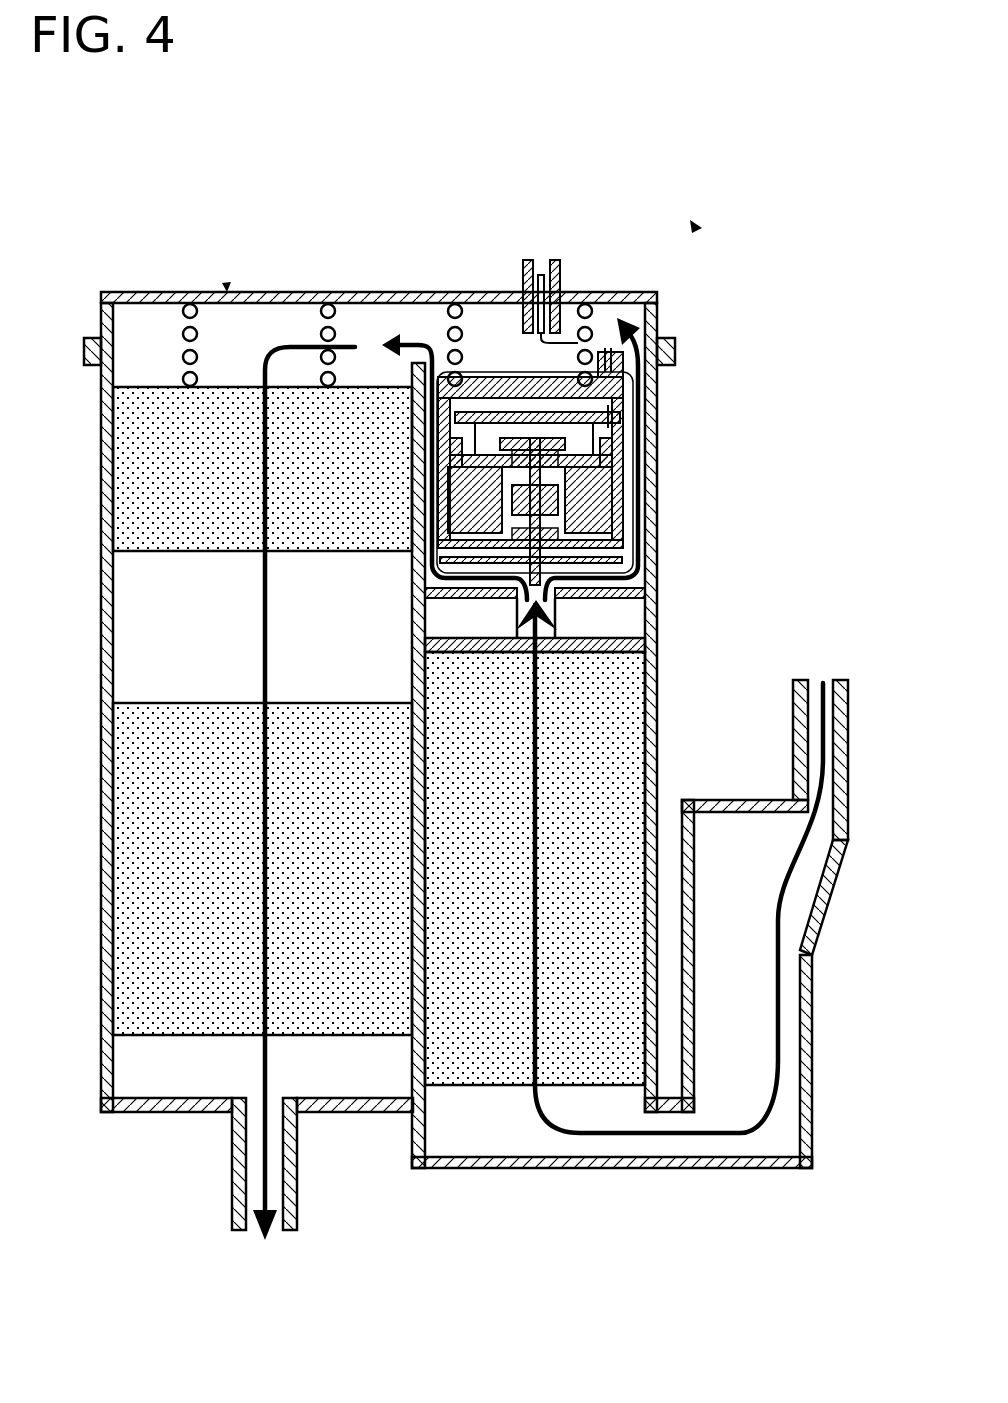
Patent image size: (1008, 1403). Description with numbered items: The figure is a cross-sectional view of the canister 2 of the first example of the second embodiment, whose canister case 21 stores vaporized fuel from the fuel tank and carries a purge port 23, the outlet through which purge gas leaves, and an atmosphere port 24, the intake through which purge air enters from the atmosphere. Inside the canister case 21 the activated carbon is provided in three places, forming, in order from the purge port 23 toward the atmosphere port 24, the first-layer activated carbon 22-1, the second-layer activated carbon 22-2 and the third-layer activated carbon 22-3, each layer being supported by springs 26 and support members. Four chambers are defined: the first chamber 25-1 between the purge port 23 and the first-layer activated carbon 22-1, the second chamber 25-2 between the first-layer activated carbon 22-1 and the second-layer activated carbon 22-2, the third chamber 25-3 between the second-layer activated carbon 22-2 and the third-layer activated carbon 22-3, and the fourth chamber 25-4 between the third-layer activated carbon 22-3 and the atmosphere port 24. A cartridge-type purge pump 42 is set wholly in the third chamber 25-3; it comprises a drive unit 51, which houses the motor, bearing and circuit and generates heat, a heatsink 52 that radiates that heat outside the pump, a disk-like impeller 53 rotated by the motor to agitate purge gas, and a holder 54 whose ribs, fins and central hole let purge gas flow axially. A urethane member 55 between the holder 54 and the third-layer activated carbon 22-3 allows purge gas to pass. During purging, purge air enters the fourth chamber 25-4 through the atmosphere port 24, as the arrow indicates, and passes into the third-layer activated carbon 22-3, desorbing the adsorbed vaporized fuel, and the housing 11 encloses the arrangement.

The canister 2 is at (692, 232).
The housing 11 is at (227, 290).
The canister case 21 is at (364, 292).
The purge port 23 is at (293, 1212).
The atmosphere port 24 is at (842, 702).
The springs 26 is at (184, 330).
The first-layer activated carbon 22-1 is at (130, 950).
The second-layer activated carbon 22-2 is at (133, 490).
The third-layer activated carbon 22-3 is at (468, 1053).
The first chamber 25-1 is at (168, 1073).
The second chamber 25-2 is at (128, 655).
The third chamber 25-3 is at (480, 330).
The fourth chamber 25-4 is at (745, 1142).
The purge pump 42 is at (655, 476).
The drive unit 51 is at (610, 503).
The heatsink 52 is at (625, 386).
The impeller 53 is at (607, 570).
The holder 54 is at (600, 660).
The urethane member 55 is at (620, 642).